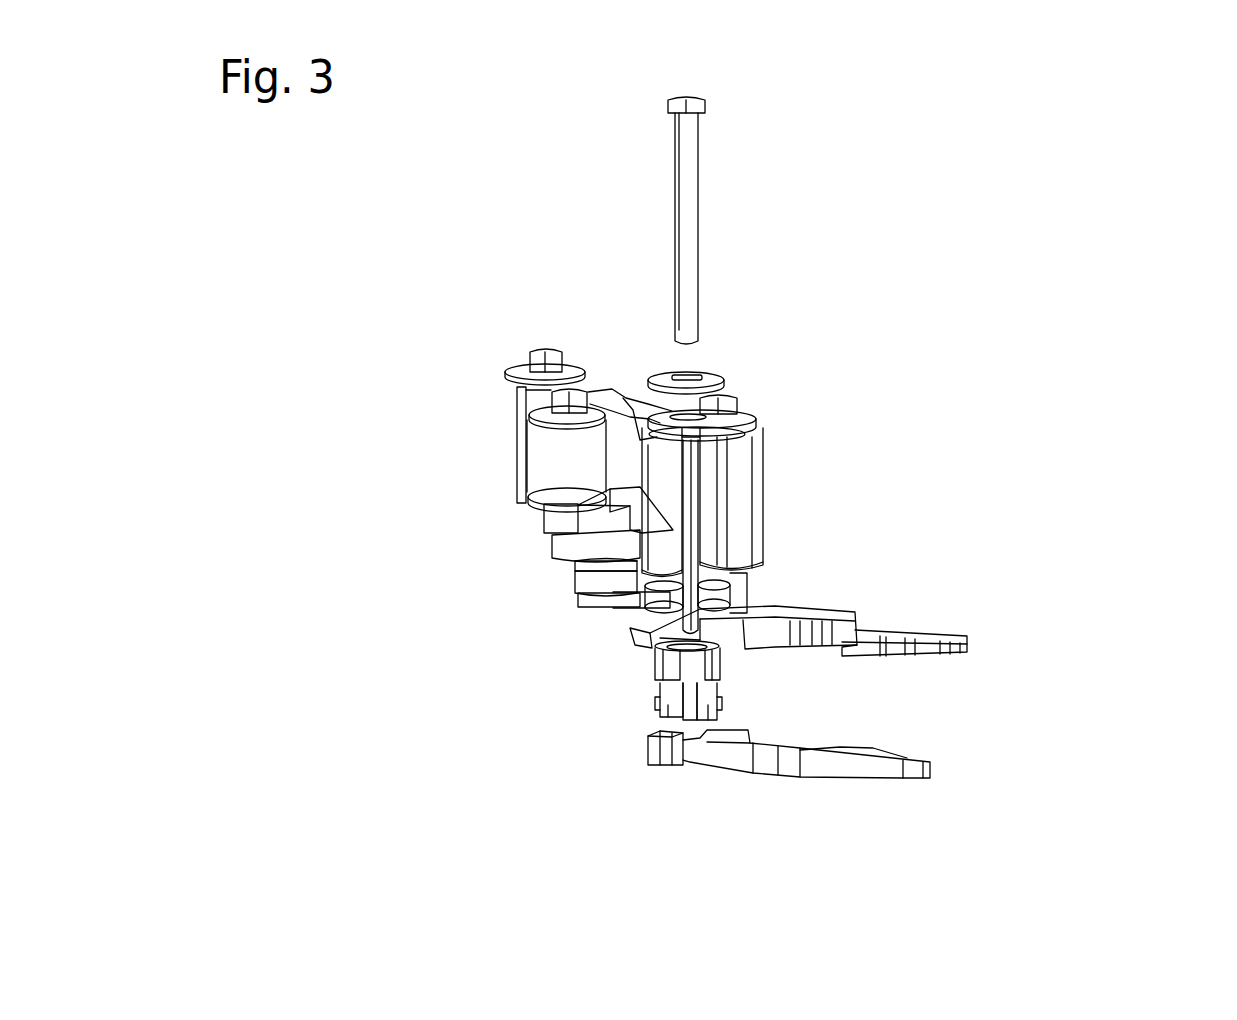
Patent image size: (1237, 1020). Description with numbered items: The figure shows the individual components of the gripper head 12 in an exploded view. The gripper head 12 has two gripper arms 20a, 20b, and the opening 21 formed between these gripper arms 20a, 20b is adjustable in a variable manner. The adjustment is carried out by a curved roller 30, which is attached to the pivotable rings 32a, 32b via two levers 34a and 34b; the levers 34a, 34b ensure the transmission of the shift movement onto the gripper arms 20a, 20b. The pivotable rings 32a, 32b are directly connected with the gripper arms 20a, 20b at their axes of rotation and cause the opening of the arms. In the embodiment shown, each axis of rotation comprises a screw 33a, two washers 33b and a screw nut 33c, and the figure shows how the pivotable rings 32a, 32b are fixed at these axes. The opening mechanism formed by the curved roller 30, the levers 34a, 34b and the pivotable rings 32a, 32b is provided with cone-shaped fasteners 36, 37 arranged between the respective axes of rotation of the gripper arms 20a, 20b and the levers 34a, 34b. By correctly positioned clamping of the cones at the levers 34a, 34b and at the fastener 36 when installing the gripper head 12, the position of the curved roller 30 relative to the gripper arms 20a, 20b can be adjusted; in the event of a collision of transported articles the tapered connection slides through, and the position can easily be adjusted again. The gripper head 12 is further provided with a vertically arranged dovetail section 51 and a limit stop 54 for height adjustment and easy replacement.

The gripper head 12 is at (452, 780).
The gripper arm 20a is at (930, 775).
The gripper arm 20b is at (967, 653).
The opening 21 is at (806, 706).
The curved roller 30 is at (577, 548).
The pivotable ring 32a is at (582, 577).
The pivotable ring 32b is at (607, 602).
The screw 33a is at (684, 186).
The washer 33b is at (645, 399).
The screw nut 33c is at (727, 395).
The lever 34a is at (668, 663).
The lever 34b is at (733, 590).
The cone-shaped fastener 36 is at (675, 702).
The cone-shaped fastener 37 is at (645, 631).
The dovetail groove 51 is at (515, 390).
The limit stop 54 is at (528, 368).